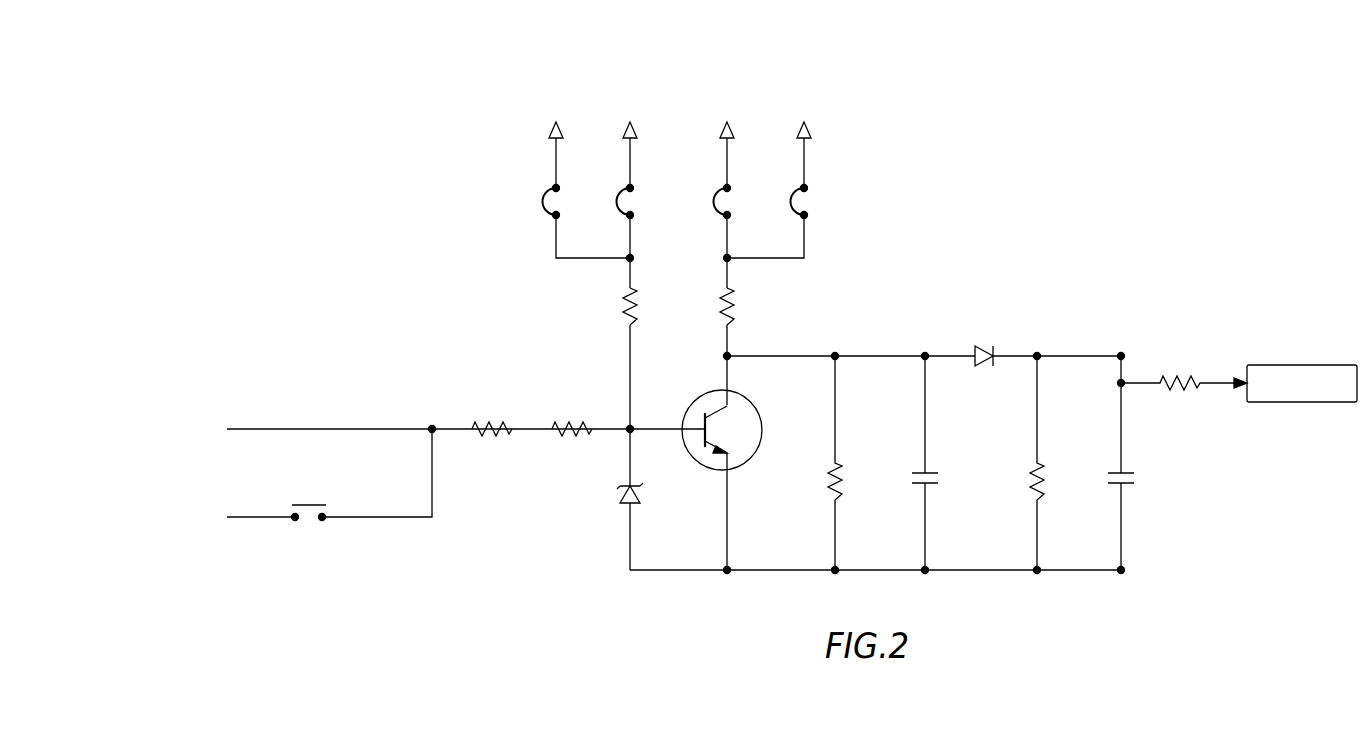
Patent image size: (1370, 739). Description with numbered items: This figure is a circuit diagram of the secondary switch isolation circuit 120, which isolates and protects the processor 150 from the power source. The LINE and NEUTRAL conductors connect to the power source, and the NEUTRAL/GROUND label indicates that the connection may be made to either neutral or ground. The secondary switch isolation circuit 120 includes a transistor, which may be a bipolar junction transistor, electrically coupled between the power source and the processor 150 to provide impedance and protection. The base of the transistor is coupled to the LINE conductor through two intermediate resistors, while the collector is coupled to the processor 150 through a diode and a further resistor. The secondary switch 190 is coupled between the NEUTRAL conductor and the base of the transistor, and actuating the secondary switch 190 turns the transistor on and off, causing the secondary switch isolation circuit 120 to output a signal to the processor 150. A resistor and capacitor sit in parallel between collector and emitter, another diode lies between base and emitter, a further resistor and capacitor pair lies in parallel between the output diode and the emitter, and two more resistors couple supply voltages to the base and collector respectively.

The secondary switch isolation circuit 120 is at (398, 230).
The processor 150 is at (1300, 365).
The secondary switch 190 is at (310, 526).